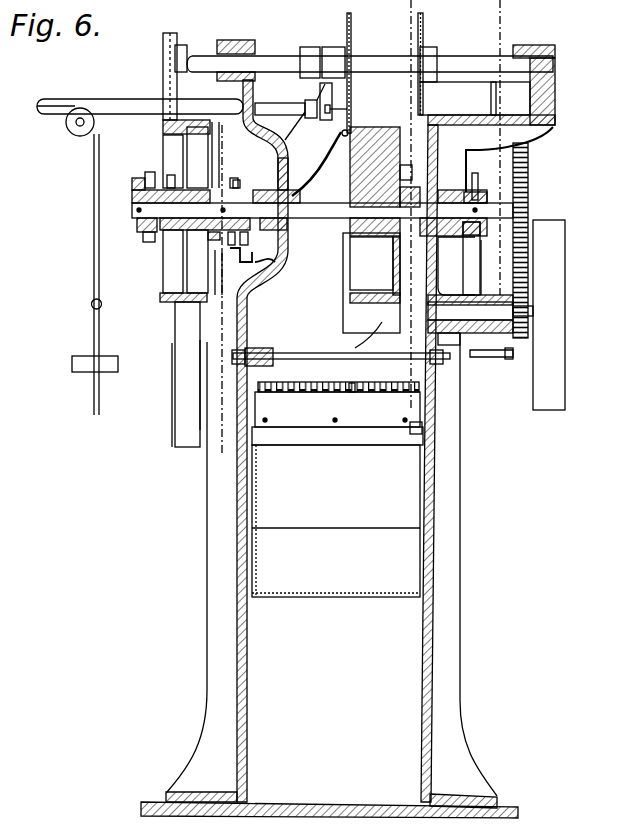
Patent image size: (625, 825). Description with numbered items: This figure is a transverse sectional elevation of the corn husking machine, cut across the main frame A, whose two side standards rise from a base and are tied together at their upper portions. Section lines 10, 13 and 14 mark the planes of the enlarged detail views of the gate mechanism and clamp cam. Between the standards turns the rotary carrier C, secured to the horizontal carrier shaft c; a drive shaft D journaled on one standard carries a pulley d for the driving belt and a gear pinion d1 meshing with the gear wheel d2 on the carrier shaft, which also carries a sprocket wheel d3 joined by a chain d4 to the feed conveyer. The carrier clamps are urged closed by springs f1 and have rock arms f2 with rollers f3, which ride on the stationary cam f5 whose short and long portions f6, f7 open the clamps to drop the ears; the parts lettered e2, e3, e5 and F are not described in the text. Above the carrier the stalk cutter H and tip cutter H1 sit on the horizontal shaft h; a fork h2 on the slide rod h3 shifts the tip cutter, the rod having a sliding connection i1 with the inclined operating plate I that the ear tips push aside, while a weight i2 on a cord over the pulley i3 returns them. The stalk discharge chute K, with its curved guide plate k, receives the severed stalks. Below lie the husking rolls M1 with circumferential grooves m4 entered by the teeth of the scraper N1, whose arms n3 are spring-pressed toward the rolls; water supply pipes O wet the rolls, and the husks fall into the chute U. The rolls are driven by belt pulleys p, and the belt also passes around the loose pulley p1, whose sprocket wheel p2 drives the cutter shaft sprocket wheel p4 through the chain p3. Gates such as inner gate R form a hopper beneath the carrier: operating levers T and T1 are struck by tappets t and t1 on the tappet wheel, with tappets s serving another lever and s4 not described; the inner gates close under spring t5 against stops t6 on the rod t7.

The main frame A is at (216, 603).
The section line 10 is at (222, 175).
The horizontal shaft h is at (481, 70).
The stalk cutter H is at (347, 16).
The tip cutter H1 is at (423, 19).
The section line 13 is at (376, 8).
The section line 14 is at (470, 8).
The fork h2 is at (312, 87).
The horizontal slide rod h3 is at (286, 125).
The sliding connection i1 is at (348, 109).
The springs f1 is at (320, 163).
The curved guide plate k is at (455, 82).
The stalk discharge chute K is at (472, 113).
The post e5 is at (478, 186).
The rotary carrier C is at (350, 231).
The rock arms f2 is at (411, 186).
The clamp rollers f3 is at (412, 170).
The carrier shaft c is at (326, 203).
The sprocket wheel d3 is at (143, 186).
The chain d4 is at (146, 244).
The gear wheel d2 is at (528, 209).
The pulley d is at (565, 361).
The gear pinion d1 is at (530, 312).
The post e3 is at (480, 258).
The housing band e2 is at (481, 290).
The long cam portion f7 is at (456, 266).
The short cam portion f6 is at (481, 266).
The stationary cam f5 is at (393, 262).
The frame F is at (343, 320).
The spring t5 is at (370, 326).
The inner gate R is at (290, 352).
The stops t6 is at (262, 347).
The rod t7 is at (301, 352).
The tappets t is at (273, 258).
The operating lever T is at (243, 263).
The tappets t1 is at (228, 280).
The operating lever T1 is at (234, 178).
The inclined operating plate I is at (276, 174).
The stop s4 is at (203, 239).
The tappets s is at (208, 252).
The sprocket wheel p2 is at (165, 284).
The pulley p1 is at (190, 303).
The belt pulley p is at (190, 337).
The chain p3 is at (182, 99).
The sprocket wheel p4 is at (163, 45).
The pulley i3 is at (75, 134).
The weight i2 is at (72, 364).
The husking rolls M1 is at (337, 404).
The circumferential grooves m4 is at (352, 392).
The scraper N1 is at (322, 427).
The arms n3 is at (410, 432).
The chute U is at (336, 521).
The water supply pipes O is at (486, 358).
The drive shaft D is at (495, 346).